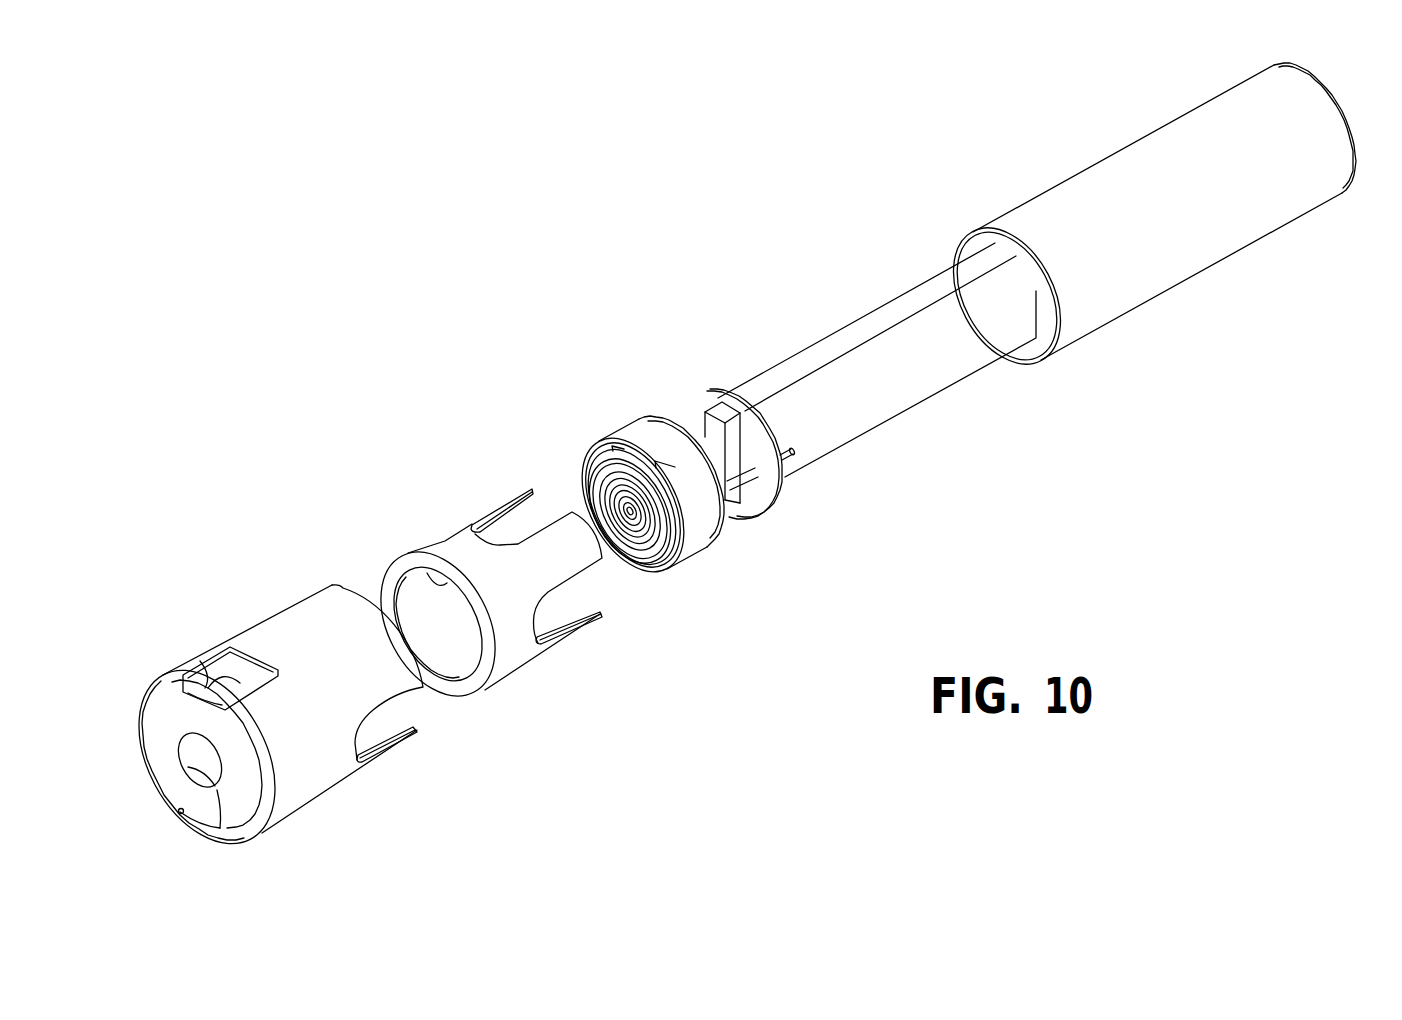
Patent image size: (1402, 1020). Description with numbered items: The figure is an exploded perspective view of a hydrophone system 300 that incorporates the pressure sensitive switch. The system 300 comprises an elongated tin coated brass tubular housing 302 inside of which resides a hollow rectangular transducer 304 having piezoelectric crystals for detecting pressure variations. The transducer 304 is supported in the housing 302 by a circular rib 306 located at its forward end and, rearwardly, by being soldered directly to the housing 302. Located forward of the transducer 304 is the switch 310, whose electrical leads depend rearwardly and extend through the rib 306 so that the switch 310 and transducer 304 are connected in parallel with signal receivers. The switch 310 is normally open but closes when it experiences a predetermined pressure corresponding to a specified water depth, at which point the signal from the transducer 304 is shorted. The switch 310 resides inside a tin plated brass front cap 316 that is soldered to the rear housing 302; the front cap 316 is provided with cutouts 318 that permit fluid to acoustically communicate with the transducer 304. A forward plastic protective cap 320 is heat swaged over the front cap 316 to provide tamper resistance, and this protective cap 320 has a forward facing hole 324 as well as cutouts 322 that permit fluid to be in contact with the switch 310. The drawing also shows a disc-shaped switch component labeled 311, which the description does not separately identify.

The hydrophone system 300 is at (718, 287).
The tubular housing 302 is at (1212, 232).
The transducer 304 is at (912, 388).
The circular rib 306 is at (787, 489).
The switch 310 is at (735, 583).
The spring housing disc 311 is at (727, 525).
The front cap 316 is at (535, 558).
The cutouts 318 is at (591, 523).
The protective cap 320 is at (326, 733).
The cutouts 322 is at (417, 722).
The forward facing hole 324 is at (220, 828).